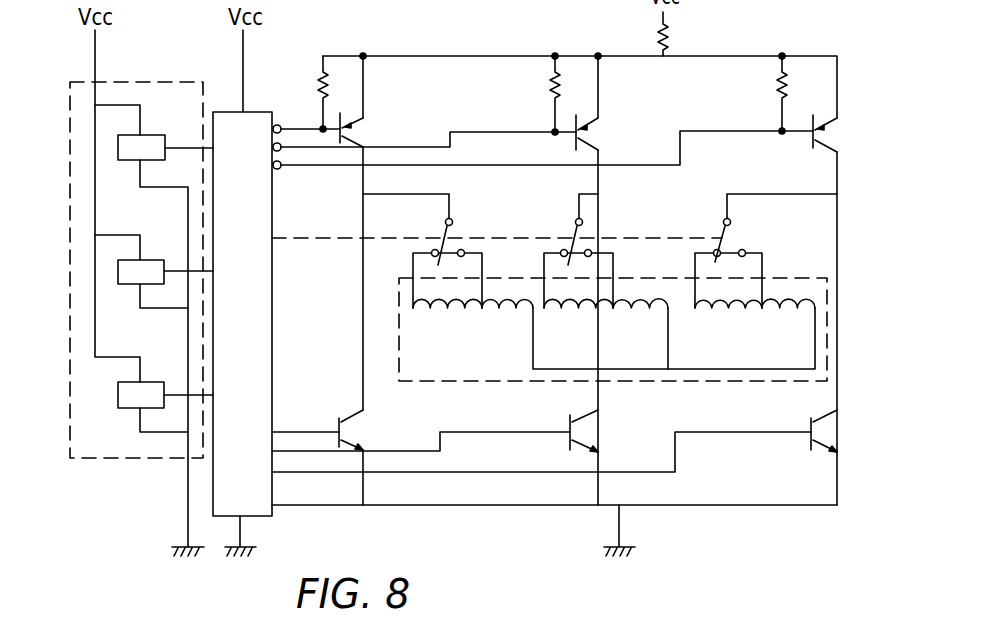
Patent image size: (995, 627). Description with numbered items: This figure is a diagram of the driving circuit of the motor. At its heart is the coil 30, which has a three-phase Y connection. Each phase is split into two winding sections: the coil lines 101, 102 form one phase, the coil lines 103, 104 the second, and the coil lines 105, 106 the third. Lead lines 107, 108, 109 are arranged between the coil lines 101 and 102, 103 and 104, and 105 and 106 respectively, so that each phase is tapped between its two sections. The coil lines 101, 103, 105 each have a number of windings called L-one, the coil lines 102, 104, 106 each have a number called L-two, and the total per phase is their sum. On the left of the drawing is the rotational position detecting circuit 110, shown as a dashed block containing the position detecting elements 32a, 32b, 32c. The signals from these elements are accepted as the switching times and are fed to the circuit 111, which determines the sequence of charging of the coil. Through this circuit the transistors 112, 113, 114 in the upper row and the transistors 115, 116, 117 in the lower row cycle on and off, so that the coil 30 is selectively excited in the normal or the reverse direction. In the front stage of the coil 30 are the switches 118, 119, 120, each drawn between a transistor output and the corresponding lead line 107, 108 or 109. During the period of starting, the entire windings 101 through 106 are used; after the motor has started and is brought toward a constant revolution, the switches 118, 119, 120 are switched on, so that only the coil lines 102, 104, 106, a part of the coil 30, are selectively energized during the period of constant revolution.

The coil 30 is at (830, 290).
The rotational position detecting circuit 110 is at (68, 146).
The position detecting element 32a is at (122, 152).
The position detecting element 32b is at (118, 270).
The position detecting element 32c is at (123, 408).
The circuit 111 is at (259, 110).
The transistor 112 is at (347, 120).
The transistor 113 is at (578, 120).
The transistor 114 is at (819, 125).
The transistor 115 is at (357, 444).
The transistor 116 is at (598, 457).
The transistor 117 is at (810, 437).
The switch 118 is at (443, 230).
The switch 119 is at (588, 218).
The switch 120 is at (730, 240).
The lead line 107 is at (463, 250).
The lead line 108 is at (592, 250).
The lead line 109 is at (746, 250).
The coil line 101 is at (440, 310).
The coil line 102 is at (513, 310).
The coil line 103 is at (573, 310).
The coil line 104 is at (648, 310).
The coil line 105 is at (725, 310).
The coil line 106 is at (795, 310).